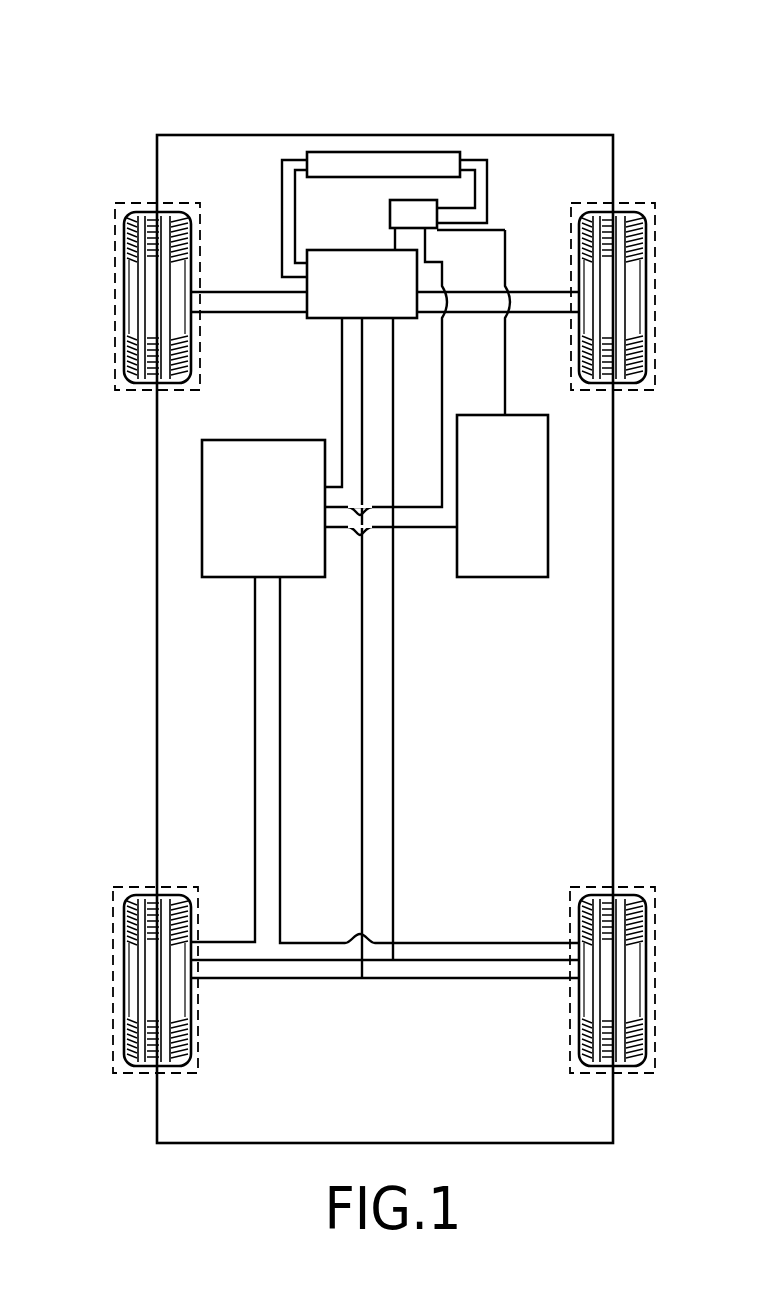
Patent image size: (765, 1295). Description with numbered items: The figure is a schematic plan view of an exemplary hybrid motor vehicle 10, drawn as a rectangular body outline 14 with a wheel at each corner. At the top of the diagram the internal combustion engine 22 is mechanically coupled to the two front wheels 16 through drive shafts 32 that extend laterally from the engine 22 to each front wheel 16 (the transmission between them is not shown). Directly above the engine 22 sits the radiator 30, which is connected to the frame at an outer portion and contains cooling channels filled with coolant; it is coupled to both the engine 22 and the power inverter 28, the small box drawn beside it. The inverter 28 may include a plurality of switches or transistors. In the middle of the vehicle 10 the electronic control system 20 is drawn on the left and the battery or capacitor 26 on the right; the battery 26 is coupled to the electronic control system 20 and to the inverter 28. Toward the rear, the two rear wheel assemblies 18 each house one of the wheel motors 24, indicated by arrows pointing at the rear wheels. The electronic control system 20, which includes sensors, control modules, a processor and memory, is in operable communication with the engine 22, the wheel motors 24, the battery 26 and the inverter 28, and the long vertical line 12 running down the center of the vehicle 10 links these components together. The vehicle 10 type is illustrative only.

The motor vehicle 10 is at (620, 74).
The communication line 12 is at (360, 657).
The vehicle body/frame 14 is at (157, 492).
The front wheels 16 is at (115, 268).
The rear wheel assemblies 18 is at (113, 967).
The electronic control system 20 is at (250, 523).
The internal combustion engine 22 is at (349, 300).
The wheel motors 24 is at (204, 1018).
The battery/capacitor 26 is at (489, 511).
The power inverter 28 is at (418, 200).
The radiator 30 is at (340, 152).
The drive shafts 32 is at (243, 292).